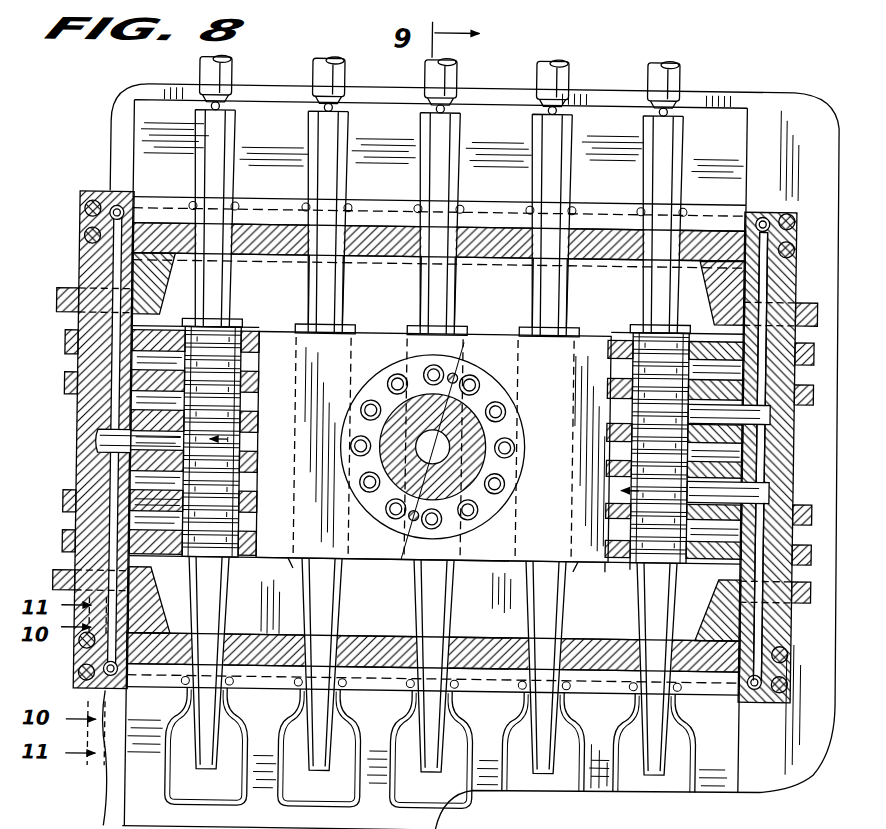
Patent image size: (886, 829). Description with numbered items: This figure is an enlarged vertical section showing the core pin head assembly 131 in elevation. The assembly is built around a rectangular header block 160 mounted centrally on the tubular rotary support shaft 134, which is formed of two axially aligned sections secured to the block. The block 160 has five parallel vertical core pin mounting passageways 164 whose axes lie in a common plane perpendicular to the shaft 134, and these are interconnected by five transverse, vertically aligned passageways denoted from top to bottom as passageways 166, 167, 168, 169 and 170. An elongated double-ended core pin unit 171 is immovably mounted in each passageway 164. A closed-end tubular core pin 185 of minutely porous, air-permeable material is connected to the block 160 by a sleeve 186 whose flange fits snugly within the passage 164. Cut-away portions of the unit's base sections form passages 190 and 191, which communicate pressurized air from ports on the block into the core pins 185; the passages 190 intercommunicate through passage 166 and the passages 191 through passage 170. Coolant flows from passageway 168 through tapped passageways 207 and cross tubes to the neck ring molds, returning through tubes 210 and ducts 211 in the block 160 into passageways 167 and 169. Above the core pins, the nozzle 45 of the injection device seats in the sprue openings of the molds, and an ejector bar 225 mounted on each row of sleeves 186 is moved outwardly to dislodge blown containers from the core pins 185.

The nozzle 45 is at (226, 81).
The core pin head assembly 131 is at (710, 160).
The tubular rotary support shaft 134 is at (475, 480).
The header block 160 is at (375, 351).
The core pin mounting passageway 164 is at (221, 355).
The transverse passageway 166 is at (142, 362).
The transverse passageway 167 is at (142, 409).
The transverse passageway 168 is at (142, 445).
The transverse passageway 169 is at (142, 481).
The transverse passageway 170 is at (142, 523).
The double-ended core pin unit 171 is at (414, 572).
The core pin 185 is at (432, 158).
The sleeve 186 is at (546, 284).
The passage 190 is at (704, 361).
The passage 191 is at (705, 557).
The tapped passageway 207 is at (110, 269).
The tube 210 is at (761, 693).
The duct 211 is at (774, 284).
The ejector bar 225 is at (589, 261).